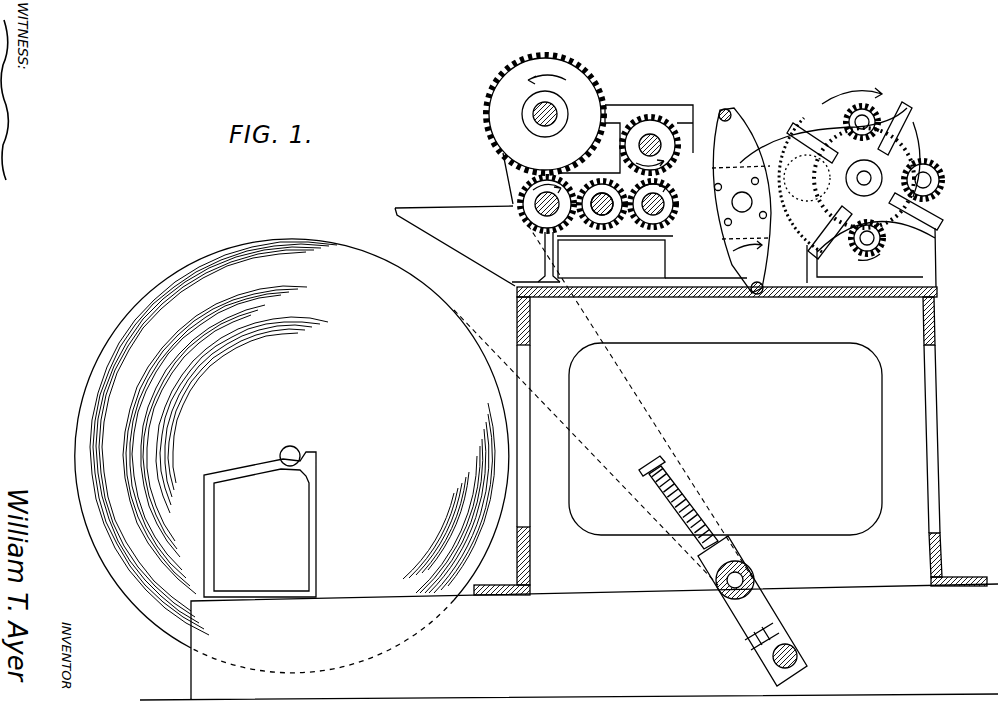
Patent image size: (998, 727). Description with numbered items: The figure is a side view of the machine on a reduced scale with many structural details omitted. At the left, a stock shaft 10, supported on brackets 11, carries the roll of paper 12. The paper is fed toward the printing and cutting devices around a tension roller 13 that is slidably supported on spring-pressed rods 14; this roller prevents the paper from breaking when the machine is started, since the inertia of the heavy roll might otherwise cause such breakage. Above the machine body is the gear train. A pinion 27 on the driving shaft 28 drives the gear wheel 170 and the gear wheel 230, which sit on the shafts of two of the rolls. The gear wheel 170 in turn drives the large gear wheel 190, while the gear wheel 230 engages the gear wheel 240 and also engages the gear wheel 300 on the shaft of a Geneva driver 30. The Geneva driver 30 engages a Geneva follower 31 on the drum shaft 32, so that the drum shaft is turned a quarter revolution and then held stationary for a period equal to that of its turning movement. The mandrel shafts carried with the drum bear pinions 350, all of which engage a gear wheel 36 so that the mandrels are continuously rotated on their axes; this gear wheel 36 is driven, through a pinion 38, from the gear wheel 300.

The stock shaft 10 is at (289, 446).
The brackets 11 is at (315, 509).
The roll of paper 12 is at (76, 410).
The tension roller 13 is at (752, 578).
The spring-pressed rods 14 is at (706, 519).
The pinion 27 is at (594, 227).
The driving shaft 28 is at (602, 194).
The Geneva driver 30 is at (735, 132).
The Geneva follower 31 is at (918, 122).
The drum shaft 32 is at (871, 176).
The gear wheel 36 is at (890, 242).
The pinion 38 is at (790, 262).
The gear wheel 170 is at (537, 216).
The gear wheel 190 is at (487, 98).
The gear wheel 230 is at (650, 220).
The gear wheel 240 is at (643, 118).
The gear wheel 300 is at (761, 142).
The pinions 350 is at (872, 112).